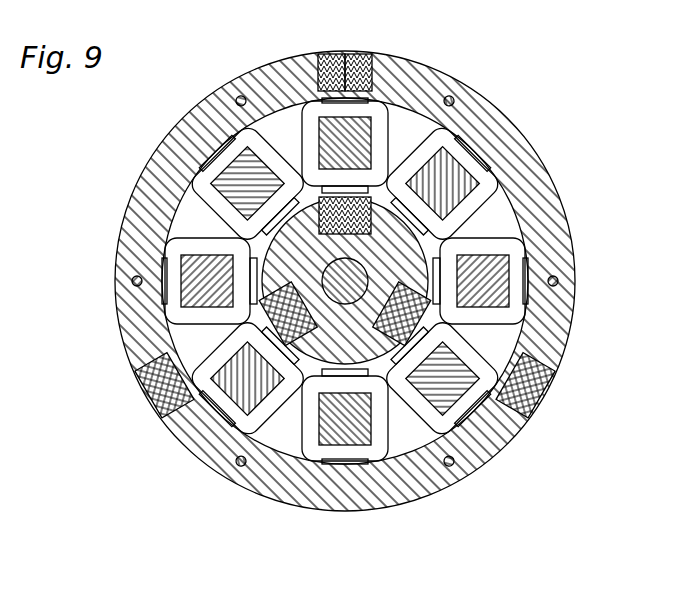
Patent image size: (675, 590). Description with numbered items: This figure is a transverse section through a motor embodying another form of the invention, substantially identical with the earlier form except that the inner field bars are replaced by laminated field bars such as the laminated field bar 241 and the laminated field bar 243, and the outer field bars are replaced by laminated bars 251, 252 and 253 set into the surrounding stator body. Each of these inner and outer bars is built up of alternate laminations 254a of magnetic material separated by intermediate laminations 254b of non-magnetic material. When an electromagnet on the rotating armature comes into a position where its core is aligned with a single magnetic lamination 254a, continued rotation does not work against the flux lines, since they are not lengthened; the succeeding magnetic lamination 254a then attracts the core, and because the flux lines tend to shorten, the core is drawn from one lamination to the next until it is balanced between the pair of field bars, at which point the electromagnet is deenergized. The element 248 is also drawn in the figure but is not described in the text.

The laminated field bar 241 is at (307, 244).
The laminated field bar 243 is at (453, 325).
The rotor permanent magnet 248 is at (257, 317).
The laminated bar 251 is at (329, 52).
The laminated bar 252 is at (148, 383).
The laminated bar 253 is at (543, 388).
The laminations of magnetic material 254a is at (320, 58).
The laminations of non-magnetic material 254b is at (328, 58).